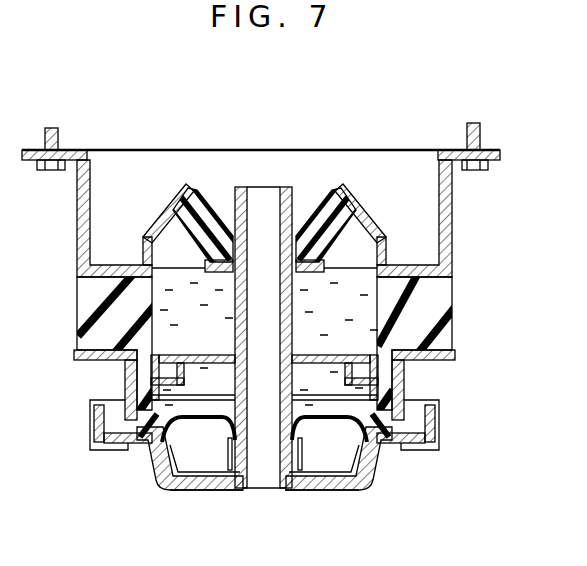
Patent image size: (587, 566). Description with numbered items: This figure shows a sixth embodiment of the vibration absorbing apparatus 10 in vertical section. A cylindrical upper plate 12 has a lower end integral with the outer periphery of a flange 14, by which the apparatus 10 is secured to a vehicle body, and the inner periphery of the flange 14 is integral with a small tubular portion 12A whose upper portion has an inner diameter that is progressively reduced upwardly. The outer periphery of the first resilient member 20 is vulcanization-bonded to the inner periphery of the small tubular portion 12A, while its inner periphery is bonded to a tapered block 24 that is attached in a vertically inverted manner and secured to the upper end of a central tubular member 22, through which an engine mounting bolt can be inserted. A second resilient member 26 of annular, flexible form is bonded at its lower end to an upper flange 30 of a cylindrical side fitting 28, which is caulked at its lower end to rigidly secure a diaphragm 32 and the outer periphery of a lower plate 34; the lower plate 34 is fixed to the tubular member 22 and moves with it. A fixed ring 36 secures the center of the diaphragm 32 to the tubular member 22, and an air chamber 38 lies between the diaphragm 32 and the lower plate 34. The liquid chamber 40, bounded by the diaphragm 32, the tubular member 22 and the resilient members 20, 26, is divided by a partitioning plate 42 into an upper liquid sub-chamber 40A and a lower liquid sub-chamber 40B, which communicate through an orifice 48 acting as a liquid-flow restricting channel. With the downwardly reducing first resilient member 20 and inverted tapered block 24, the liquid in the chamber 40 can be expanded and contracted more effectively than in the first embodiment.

The vibration absorbing apparatus 10 is at (430, 130).
The upper plate 12 is at (453, 184).
The small tubular portion 12A is at (386, 244).
The flange 14 is at (492, 151).
The first resilient member 20 is at (318, 228).
The tubular member 22 is at (283, 187).
The tapered block 24 is at (298, 240).
The second resilient member 26 is at (434, 300).
The side fitting 28 is at (418, 394).
The upper flange 30 is at (455, 353).
The diaphragm 32 is at (157, 463).
The lower plate 34 is at (310, 490).
The fixed ring 36 is at (236, 490).
The air chamber 38 is at (357, 462).
The liquid chamber 40 is at (160, 292).
The upper liquid sub-chamber 40A is at (232, 347).
The lower liquid sub-chamber 40B is at (238, 397).
The partitioning plate 42 is at (325, 356).
The orifice 48 is at (125, 393).